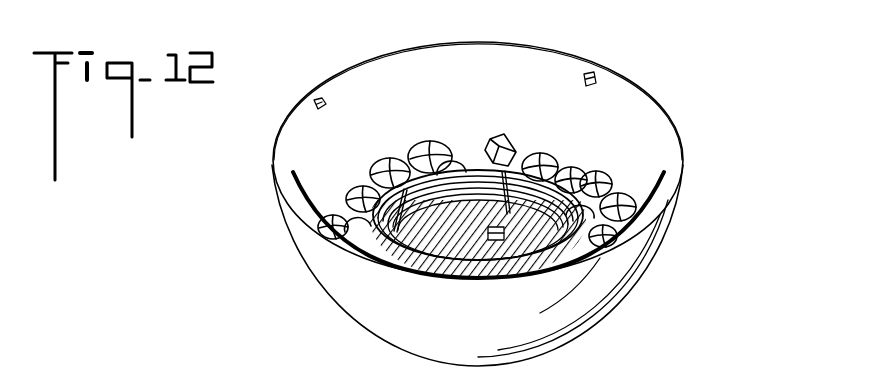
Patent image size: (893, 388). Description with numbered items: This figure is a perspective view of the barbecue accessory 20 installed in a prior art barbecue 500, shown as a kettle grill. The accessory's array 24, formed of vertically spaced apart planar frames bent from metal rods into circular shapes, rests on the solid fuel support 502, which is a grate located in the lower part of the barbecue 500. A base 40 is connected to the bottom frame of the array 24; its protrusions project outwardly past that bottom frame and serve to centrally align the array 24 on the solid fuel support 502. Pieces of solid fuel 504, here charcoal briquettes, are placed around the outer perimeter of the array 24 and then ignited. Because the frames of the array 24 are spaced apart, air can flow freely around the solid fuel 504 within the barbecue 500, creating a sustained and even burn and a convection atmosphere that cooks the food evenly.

The barbecue 500 is at (668, 91).
The base 40 is at (462, 278).
The barbecue accessory 20 is at (397, 151).
The solid fuel support 502 is at (372, 198).
The solid fuel 504 is at (510, 152).
The array 24 is at (578, 197).